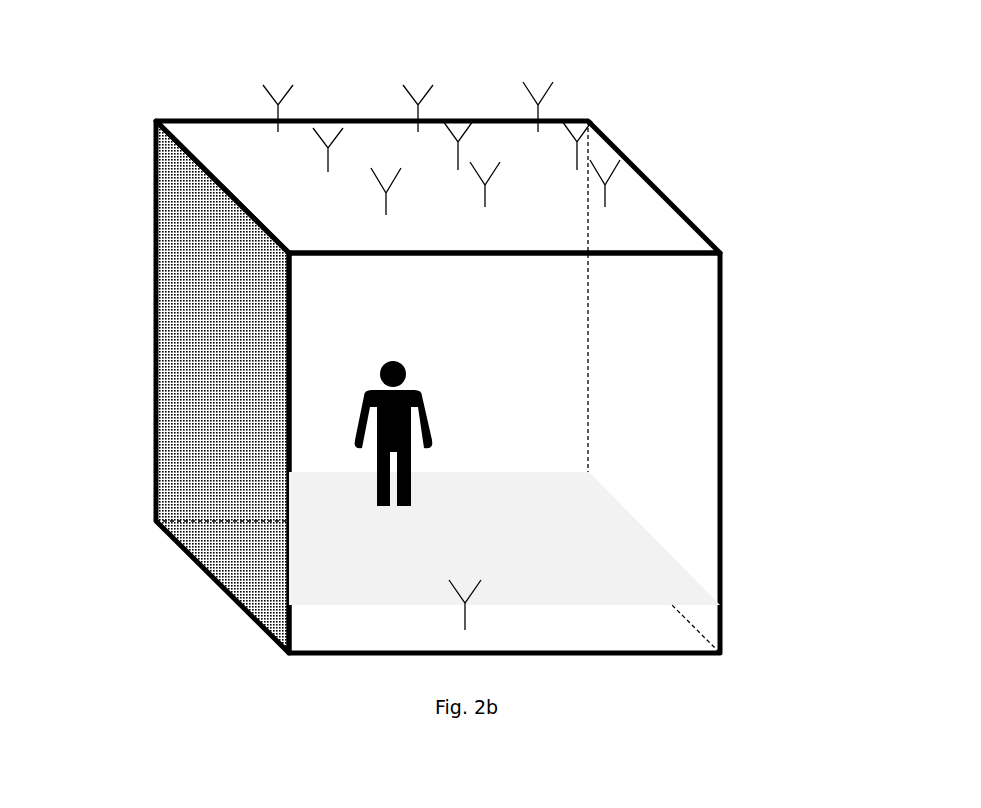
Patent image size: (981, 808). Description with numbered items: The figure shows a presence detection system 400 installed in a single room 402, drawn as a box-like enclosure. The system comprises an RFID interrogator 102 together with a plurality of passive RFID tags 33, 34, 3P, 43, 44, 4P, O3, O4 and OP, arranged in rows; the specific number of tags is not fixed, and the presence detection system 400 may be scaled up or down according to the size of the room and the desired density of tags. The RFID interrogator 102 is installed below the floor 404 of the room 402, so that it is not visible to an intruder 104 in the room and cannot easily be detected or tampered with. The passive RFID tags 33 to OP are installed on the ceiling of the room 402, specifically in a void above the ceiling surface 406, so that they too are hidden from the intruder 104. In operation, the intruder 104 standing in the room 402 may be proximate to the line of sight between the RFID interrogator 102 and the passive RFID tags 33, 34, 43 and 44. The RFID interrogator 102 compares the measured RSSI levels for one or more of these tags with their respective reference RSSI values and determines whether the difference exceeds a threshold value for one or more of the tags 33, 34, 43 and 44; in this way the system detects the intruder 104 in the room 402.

The presence detection system 400 is at (125, 71).
The ceiling surface 406 is at (247, 120).
The room 402 is at (504, 453).
The floor 404 is at (640, 548).
The intruder 104 is at (448, 408).
The RFID interrogator 102 is at (466, 616).
The passive RFID tag 33 is at (278, 122).
The passive RFID tag 34 is at (418, 122).
The passive RFID tag 3P is at (538, 121).
The passive RFID tag 43 is at (328, 164).
The passive RFID tag 44 is at (458, 159).
The passive RFID tag 4P is at (577, 158).
The passive RFID tag O3 is at (386, 205).
The passive RFID tag O4 is at (485, 200).
The passive RFID tag OP is at (605, 199).